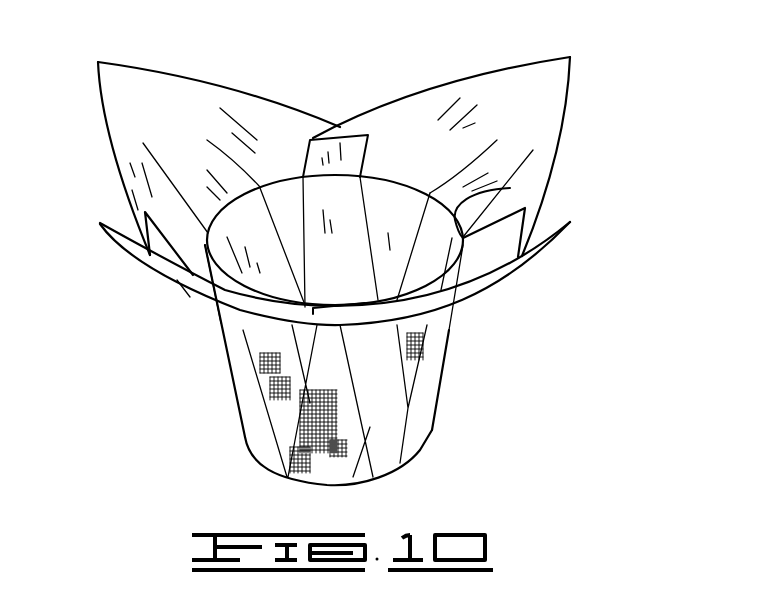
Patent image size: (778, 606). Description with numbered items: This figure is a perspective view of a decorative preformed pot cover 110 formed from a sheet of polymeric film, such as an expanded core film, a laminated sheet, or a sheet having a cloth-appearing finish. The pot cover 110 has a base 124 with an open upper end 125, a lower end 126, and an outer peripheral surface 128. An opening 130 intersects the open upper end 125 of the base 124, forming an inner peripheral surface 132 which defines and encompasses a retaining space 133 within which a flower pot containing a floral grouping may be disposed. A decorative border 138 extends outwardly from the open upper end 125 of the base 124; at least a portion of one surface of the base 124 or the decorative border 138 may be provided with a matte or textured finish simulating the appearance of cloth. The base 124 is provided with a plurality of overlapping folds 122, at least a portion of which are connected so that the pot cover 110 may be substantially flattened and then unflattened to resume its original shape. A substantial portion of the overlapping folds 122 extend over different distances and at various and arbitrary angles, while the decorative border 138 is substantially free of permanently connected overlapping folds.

The decorative preformed pot cover 110 is at (186, 351).
The overlapping folds 122 is at (293, 430).
The base 124 is at (465, 331).
The open upper end 125 is at (508, 188).
The lower end 126 is at (396, 474).
The outer peripheral surface 128 is at (443, 362).
The opening 130 is at (293, 200).
The inner peripheral surface 132 is at (173, 160).
The retaining space 133 is at (348, 243).
The decorative border 138 is at (574, 107).